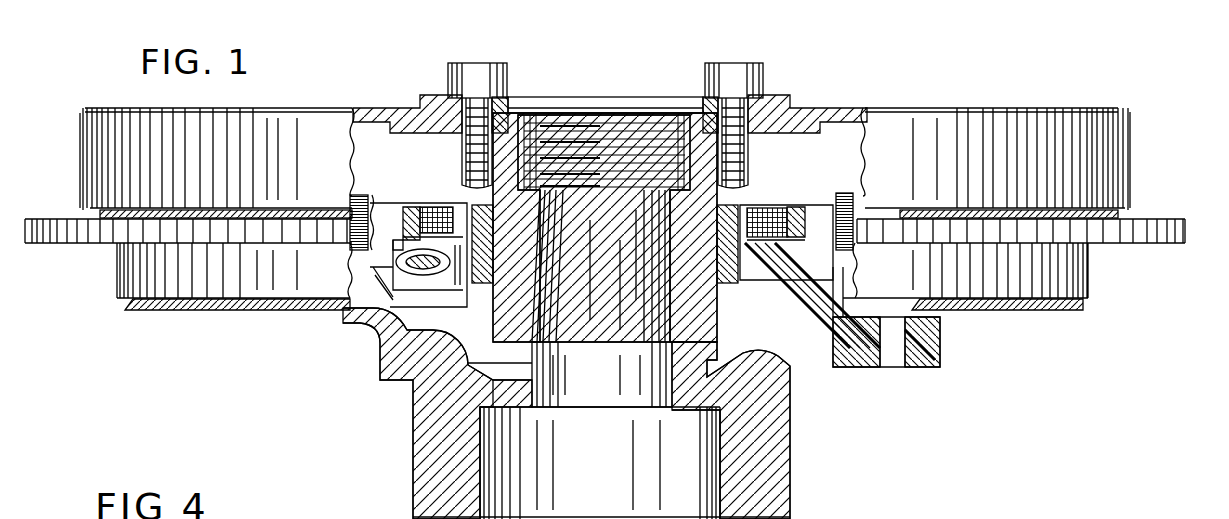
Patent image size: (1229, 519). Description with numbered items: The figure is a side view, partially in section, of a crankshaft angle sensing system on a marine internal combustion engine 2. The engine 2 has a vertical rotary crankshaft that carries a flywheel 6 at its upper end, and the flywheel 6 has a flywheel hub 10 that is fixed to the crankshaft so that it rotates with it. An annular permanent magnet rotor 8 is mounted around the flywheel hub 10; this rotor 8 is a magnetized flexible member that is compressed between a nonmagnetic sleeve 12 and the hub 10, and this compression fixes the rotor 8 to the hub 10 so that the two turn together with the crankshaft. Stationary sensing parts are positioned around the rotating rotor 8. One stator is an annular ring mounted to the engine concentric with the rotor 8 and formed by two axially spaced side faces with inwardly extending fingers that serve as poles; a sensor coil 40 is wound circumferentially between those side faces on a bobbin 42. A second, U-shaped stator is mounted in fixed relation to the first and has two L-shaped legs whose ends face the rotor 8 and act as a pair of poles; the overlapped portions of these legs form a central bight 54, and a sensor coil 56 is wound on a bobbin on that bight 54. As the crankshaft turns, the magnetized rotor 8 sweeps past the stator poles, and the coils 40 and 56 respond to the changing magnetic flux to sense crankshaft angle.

The marine internal combustion engine 2 is at (770, 430).
The flywheel 6 is at (977, 120).
The annular permanent magnet rotor 8 is at (542, 262).
The flywheel hub 10 is at (513, 328).
The nonmagnetic sleeve 12 is at (474, 300).
The sensor coil 40 is at (379, 243).
The bobbin 42 is at (452, 210).
The central bight 54 is at (428, 270).
The sensor coil 56 is at (398, 264).